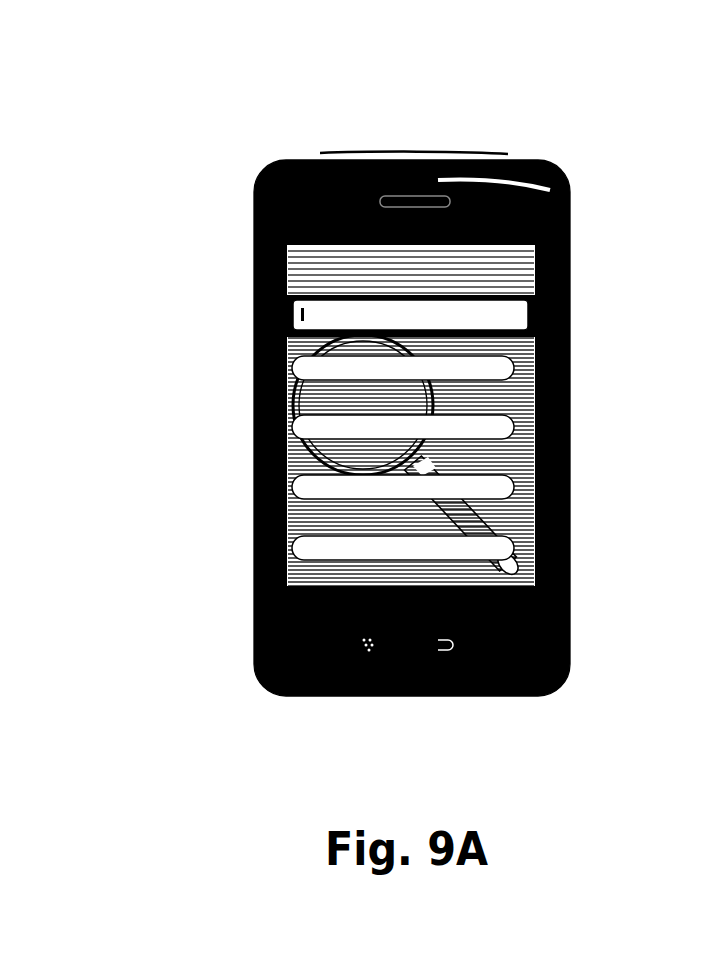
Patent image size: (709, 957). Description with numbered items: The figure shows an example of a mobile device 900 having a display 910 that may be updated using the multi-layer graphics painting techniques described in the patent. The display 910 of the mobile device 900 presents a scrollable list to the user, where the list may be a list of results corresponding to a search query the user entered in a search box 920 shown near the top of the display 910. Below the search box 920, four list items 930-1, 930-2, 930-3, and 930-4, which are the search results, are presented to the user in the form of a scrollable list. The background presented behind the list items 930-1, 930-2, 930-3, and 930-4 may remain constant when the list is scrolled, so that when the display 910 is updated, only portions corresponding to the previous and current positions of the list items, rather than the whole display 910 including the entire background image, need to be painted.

The mobile device 900 is at (260, 70).
The display 910 is at (280, 578).
The search box 920 is at (521, 304).
The list item 930-1 is at (506, 364).
The list item 930-2 is at (506, 423).
The list item 930-3 is at (506, 483).
The list item 930-4 is at (506, 543).